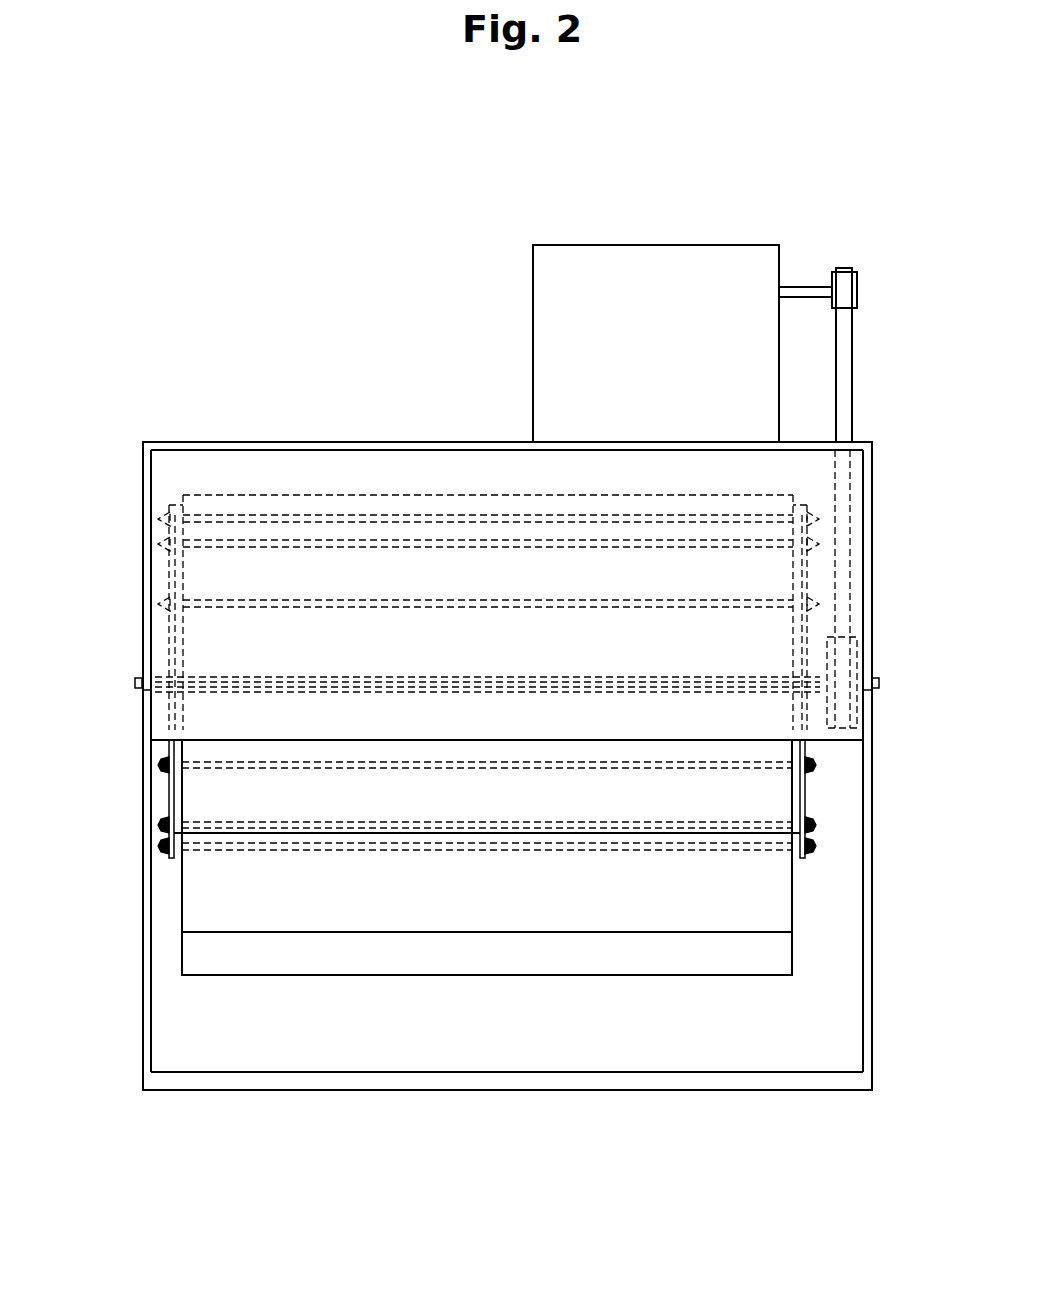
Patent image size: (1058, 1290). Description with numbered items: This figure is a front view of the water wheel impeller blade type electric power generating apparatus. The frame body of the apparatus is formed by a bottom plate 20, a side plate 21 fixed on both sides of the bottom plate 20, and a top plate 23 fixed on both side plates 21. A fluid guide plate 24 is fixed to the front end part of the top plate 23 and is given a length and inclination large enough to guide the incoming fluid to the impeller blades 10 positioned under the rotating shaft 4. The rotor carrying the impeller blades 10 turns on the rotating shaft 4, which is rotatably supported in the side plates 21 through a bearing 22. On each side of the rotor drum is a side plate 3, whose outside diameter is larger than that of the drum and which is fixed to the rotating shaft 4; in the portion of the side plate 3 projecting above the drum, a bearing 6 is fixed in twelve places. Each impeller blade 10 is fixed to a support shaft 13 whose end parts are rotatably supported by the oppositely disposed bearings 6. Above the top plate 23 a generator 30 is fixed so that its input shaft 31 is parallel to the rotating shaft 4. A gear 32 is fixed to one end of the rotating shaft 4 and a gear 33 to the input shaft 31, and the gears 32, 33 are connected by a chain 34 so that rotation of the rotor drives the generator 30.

The impeller blade 10 is at (575, 948).
The support shaft 13 is at (240, 540).
The bottom plate 20 is at (432, 1083).
The side plate 21 is at (143, 556).
The bearing 22 is at (140, 695).
The top plate 23 is at (370, 445).
The fluid guide plate 24 is at (205, 637).
The side plate 3 is at (168, 792).
The rotating shaft 4 is at (879, 680).
The bearing 6 is at (165, 835).
The generator 30 is at (550, 318).
The input shaft 31 is at (800, 286).
The gear 32 is at (863, 640).
The gear 33 is at (857, 287).
The chain 34 is at (843, 366).